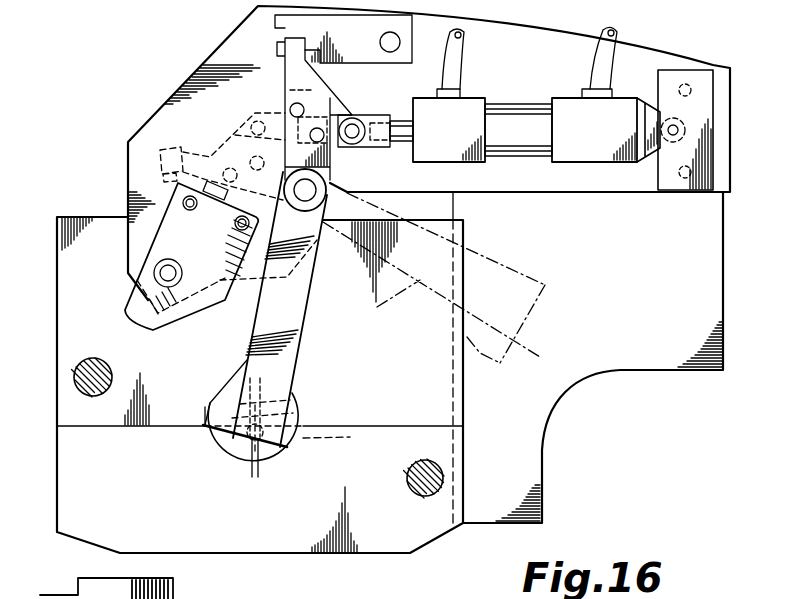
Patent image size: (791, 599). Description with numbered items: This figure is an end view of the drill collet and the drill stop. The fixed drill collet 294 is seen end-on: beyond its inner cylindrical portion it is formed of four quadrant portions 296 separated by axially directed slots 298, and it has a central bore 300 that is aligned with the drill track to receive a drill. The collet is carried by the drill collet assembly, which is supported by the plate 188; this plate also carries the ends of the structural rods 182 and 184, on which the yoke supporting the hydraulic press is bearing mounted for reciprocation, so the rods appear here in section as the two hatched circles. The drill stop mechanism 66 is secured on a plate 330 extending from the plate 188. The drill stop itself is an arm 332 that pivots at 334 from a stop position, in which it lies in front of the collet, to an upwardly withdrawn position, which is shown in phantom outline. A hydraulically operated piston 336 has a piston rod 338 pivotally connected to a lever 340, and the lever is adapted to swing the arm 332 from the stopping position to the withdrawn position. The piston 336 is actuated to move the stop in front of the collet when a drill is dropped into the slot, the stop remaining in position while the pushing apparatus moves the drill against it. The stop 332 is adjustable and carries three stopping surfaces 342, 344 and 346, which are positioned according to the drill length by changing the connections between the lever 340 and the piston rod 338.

The drill stop mechanism 66 is at (223, 130).
The structural rod 182 is at (108, 345).
The structural rod 184 is at (440, 465).
The plate 188 is at (112, 295).
The fixed drill collet 294 is at (278, 471).
The quadrant portion 296 is at (293, 452).
The axially directed slot 298 is at (253, 468).
The central bore 300 is at (297, 405).
The plate 330 is at (634, 188).
The arm 332 is at (300, 336).
The pivot 334 is at (322, 184).
The hydraulically operated piston 336 is at (518, 113).
The piston rod 338 is at (406, 125).
The lever 340 is at (293, 79).
The stopping surface 342 is at (207, 442).
The stopping surface 344 is at (226, 456).
The stopping surface 346 is at (350, 437).